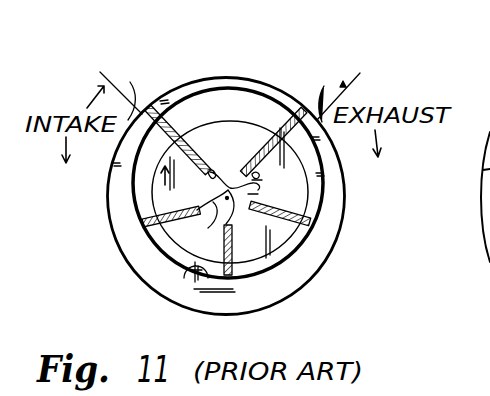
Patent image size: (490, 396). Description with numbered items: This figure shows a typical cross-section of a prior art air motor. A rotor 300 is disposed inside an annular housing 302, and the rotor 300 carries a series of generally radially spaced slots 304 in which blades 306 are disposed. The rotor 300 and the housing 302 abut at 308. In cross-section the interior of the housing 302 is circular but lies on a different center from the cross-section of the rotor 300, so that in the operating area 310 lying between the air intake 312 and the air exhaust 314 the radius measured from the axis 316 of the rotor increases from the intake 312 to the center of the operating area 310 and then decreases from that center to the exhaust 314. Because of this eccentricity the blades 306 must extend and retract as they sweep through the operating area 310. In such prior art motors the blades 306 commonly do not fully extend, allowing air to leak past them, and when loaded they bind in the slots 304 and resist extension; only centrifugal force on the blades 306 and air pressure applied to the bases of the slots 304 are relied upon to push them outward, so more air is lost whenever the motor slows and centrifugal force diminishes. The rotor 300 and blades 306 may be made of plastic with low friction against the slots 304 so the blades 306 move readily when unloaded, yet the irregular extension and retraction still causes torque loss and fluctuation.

The rotor 300 is at (248, 142).
The annular housing 302 is at (134, 242).
The slots 304 is at (245, 188).
The blades 306 is at (163, 108).
The abutment of rotor and housing 308 is at (192, 272).
The operating area 310 is at (246, 112).
The air intake 312 is at (126, 85).
The air exhaust 314 is at (358, 89).
The axis of the rotor 316 is at (204, 218).